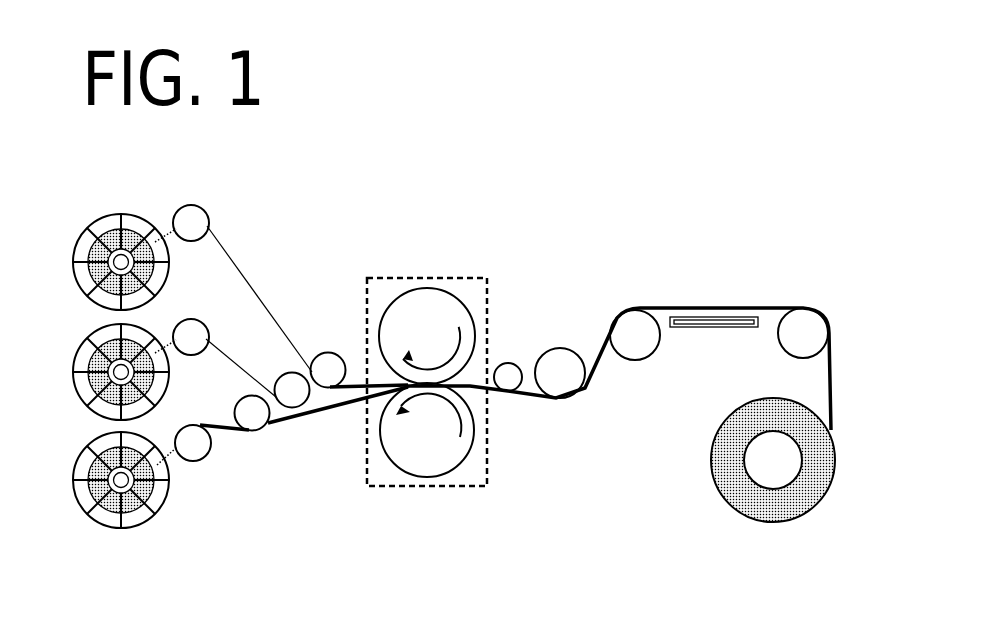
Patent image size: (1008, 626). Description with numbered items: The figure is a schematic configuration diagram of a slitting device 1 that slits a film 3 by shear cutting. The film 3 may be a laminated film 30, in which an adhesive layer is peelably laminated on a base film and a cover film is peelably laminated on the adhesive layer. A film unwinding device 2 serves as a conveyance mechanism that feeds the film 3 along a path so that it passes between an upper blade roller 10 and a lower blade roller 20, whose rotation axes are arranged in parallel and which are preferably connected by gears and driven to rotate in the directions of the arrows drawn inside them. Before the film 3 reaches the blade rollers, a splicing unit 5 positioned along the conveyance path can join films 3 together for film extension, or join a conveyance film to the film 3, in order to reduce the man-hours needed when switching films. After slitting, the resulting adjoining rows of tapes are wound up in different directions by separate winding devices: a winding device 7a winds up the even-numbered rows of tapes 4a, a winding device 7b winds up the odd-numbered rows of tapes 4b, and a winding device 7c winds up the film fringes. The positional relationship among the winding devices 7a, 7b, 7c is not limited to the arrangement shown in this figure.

The slitting device 1 is at (457, 389).
The film unwinding device 2 is at (775, 522).
The film 3 is at (653, 369).
The laminated film 30 is at (833, 390).
The even-numbered rows of tapes 4a is at (233, 259).
The odd-numbered rows of tapes 4b is at (217, 343).
The splicing unit 5 is at (715, 280).
The winding device 7a is at (73, 247).
The winding device 7b is at (73, 357).
The winding device 7c is at (73, 468).
The upper blade roller 10 is at (429, 287).
The lower blade roller 20 is at (427, 488).